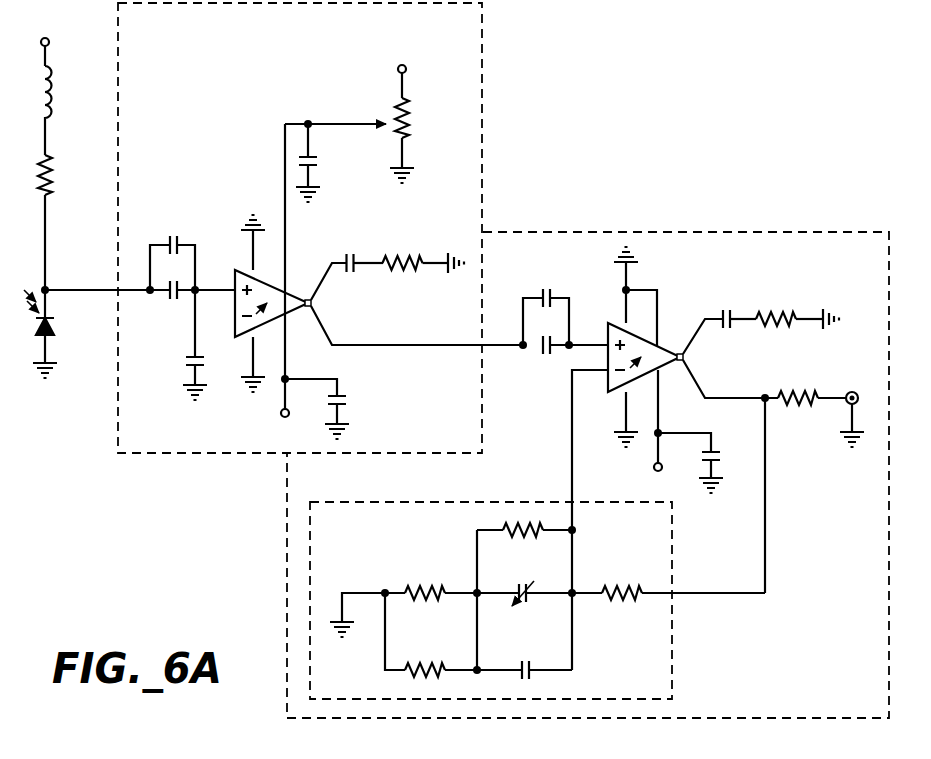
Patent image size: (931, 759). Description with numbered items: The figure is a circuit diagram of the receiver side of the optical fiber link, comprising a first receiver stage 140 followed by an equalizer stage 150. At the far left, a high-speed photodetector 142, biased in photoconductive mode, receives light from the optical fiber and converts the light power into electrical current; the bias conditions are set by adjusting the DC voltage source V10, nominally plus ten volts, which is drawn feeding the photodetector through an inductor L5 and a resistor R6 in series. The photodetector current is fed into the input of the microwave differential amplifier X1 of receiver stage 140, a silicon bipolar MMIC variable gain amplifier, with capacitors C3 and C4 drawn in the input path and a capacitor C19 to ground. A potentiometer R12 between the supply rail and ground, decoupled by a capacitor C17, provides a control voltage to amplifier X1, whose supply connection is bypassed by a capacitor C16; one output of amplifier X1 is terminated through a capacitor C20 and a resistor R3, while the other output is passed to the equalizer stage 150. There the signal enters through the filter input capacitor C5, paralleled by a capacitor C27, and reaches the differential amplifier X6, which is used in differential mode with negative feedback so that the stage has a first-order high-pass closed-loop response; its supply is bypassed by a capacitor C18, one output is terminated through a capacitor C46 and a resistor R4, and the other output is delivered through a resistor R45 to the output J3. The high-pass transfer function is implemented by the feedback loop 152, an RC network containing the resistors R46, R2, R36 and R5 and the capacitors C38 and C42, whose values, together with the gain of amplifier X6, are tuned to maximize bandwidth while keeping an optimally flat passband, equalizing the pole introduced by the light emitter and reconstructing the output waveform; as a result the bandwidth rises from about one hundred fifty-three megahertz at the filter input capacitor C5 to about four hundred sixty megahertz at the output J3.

The DC voltage source V10 is at (48, 34).
The inductor L5 is at (58, 88).
The resistor R6 is at (54, 168).
The photodetector 142 is at (57, 330).
The receiver stage 140 is at (482, 46).
The capacitor C3 is at (186, 214).
The capacitor C4 is at (181, 296).
The capacitor C19 is at (188, 370).
The microwave differential amplifier X1 is at (287, 320).
The capacitor C16 is at (342, 394).
The capacitor C17 is at (316, 167).
The potentiometer R12 is at (393, 112).
The capacitor C20 is at (360, 258).
The resistor R3 is at (402, 270).
The equalizer stage 150 is at (737, 229).
The capacitor C27 is at (557, 268).
The filter input capacitor C5 is at (550, 352).
The differential amplifier X6 is at (662, 372).
The capacitor C18 is at (718, 462).
The capacitor C46 is at (730, 306).
The resistor R4 is at (762, 324).
The resistor R45 is at (790, 386).
The output J3 is at (852, 390).
The feedback loop 152 is at (483, 503).
The resistor R46 is at (508, 522).
The resistor R2 is at (421, 584).
The capacitor C38 is at (518, 588).
The resistor R36 is at (636, 582).
The resistor R5 is at (438, 662).
The capacitor C42 is at (518, 662).